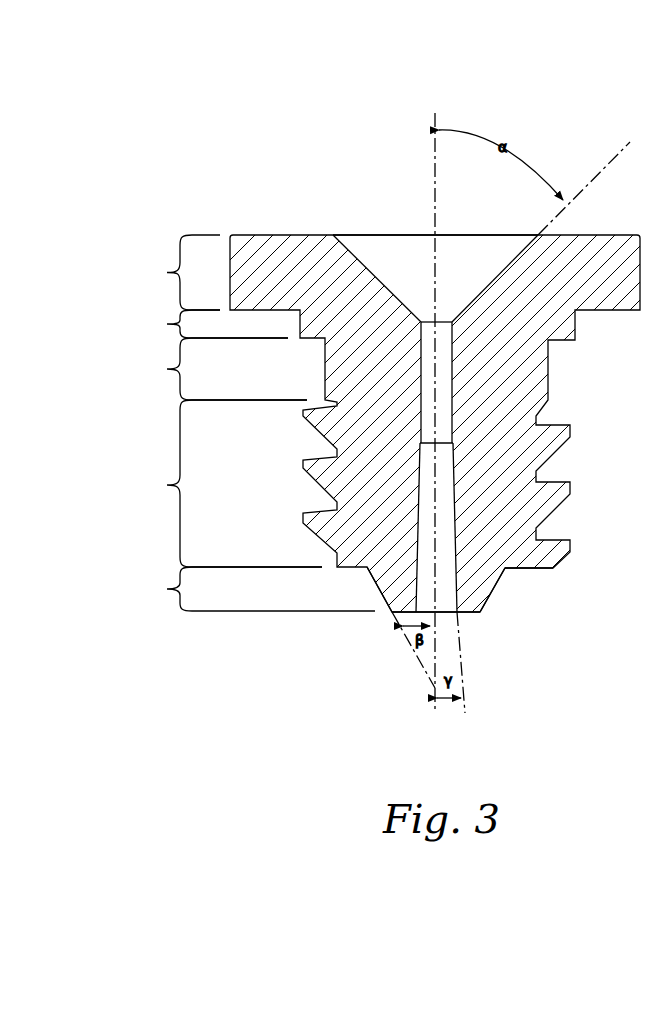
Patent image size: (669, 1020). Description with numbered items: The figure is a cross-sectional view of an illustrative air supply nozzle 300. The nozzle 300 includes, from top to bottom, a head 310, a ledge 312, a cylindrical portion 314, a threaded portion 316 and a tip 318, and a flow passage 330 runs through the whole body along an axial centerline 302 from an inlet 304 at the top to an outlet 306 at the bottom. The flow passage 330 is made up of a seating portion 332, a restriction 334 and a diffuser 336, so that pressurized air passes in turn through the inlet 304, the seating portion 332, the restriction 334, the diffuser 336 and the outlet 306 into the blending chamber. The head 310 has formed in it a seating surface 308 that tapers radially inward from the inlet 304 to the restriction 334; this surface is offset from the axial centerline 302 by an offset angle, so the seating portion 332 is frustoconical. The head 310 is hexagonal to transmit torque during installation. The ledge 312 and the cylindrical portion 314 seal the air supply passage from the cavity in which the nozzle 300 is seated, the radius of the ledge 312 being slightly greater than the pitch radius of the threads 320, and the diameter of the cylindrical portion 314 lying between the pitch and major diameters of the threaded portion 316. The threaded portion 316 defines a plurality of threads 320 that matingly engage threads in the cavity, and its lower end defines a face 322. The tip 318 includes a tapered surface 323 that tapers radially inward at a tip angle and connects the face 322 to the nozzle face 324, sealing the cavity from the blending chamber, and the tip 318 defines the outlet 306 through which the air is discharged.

The nozzle 300 is at (226, 100).
The axial centerline 302 is at (432, 152).
The inlet 304 is at (463, 233).
The outlet 306 is at (449, 614).
The seating surface 308 is at (493, 279).
The head 310 is at (174, 272).
The ledge 312 is at (208, 324).
The cylindrical portion 314 is at (217, 369).
The threaded portion 316 is at (225, 483).
The tip 318 is at (251, 589).
The threads 320 is at (581, 531).
The face 322 is at (536, 569).
The tapered surface 323 is at (495, 578).
The nozzle face 324 is at (470, 613).
The flow passage 330 is at (378, 204).
The seating portion 332 is at (400, 273).
The restriction 334 is at (420, 407).
The diffuser 336 is at (418, 543).